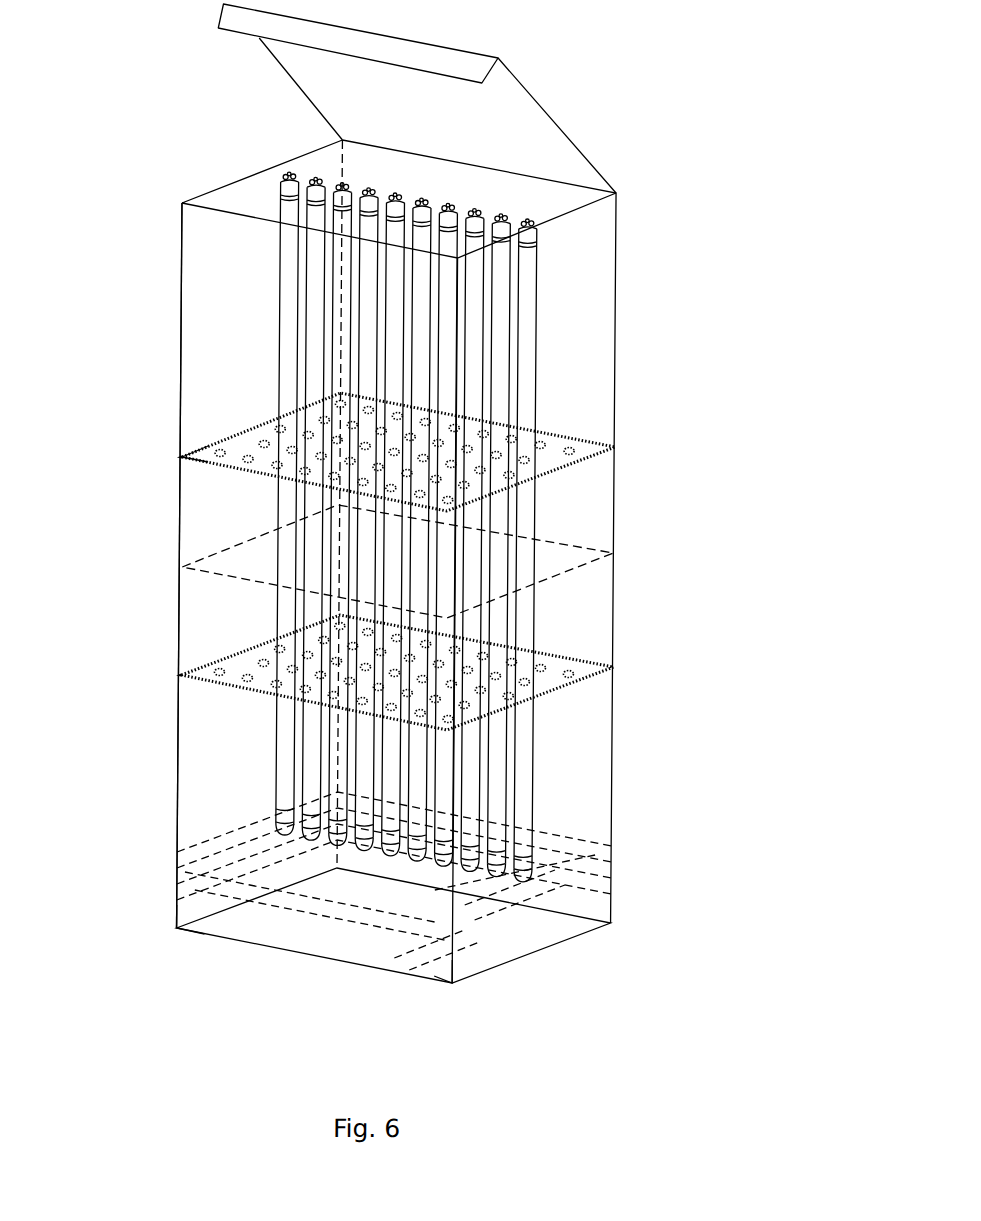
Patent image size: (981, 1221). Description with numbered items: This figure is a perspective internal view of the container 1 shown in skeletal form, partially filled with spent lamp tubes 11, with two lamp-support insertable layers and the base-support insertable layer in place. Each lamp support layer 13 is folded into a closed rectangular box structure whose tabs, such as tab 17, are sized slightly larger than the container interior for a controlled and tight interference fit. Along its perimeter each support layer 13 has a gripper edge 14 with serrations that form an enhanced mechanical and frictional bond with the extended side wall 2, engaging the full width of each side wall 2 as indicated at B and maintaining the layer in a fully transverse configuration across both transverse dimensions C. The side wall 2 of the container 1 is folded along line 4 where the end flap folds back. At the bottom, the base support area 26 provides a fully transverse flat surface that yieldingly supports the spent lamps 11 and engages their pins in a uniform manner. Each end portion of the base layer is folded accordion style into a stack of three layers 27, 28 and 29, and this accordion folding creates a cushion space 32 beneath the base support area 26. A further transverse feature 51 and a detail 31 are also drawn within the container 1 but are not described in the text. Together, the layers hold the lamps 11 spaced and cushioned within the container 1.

The container 1 is at (254, 148).
The extended side wall 2 is at (572, 133).
The fold line 4 is at (620, 193).
The spent lamp tubes 11 is at (278, 207).
The lamp support layer 13 is at (246, 458).
The gripper edge 14 is at (250, 419).
The tab 17 is at (206, 617).
The intermediate plate 51 is at (586, 572).
The base support area 26 is at (374, 931).
The first folded layer 27 is at (183, 939).
The second folded layer 28 is at (174, 908).
The third folded layer 29 is at (175, 884).
The channel 31 is at (536, 870).
The cushion space 32 is at (299, 945).
The gripper edge engagement B is at (244, 474).
The transverse dimensions C is at (222, 433).